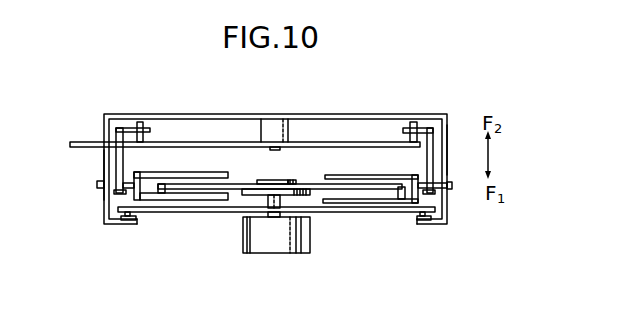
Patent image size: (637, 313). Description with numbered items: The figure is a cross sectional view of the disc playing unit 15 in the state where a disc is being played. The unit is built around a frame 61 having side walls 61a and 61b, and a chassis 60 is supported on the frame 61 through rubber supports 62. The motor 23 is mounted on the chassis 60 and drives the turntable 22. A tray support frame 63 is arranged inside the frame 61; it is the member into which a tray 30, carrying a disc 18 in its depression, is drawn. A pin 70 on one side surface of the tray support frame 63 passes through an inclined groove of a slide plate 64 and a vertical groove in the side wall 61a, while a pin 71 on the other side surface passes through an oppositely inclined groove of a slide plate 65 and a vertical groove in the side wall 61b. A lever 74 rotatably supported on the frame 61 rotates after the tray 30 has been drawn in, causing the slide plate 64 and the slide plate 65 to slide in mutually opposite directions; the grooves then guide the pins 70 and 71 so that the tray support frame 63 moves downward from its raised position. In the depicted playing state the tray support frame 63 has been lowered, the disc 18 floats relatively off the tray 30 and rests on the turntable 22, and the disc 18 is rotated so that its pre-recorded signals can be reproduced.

The disc playing unit 15 is at (407, 88).
The disc 18 is at (243, 182).
The turntable 22 is at (298, 160).
The motor 23 is at (274, 254).
The tray 30 is at (367, 201).
The chassis 60 is at (198, 212).
The frame 61 is at (350, 115).
The side wall of the frame 61a is at (103, 172).
The side wall of the frame 61b is at (448, 140).
The rubber support 62 is at (127, 222).
The tray support frame 63 is at (178, 163).
The slide plate 64 is at (116, 155).
The slide plate 65 is at (428, 128).
The pin 70 is at (97, 185).
The pin 71 is at (453, 187).
The lever 74 is at (213, 142).